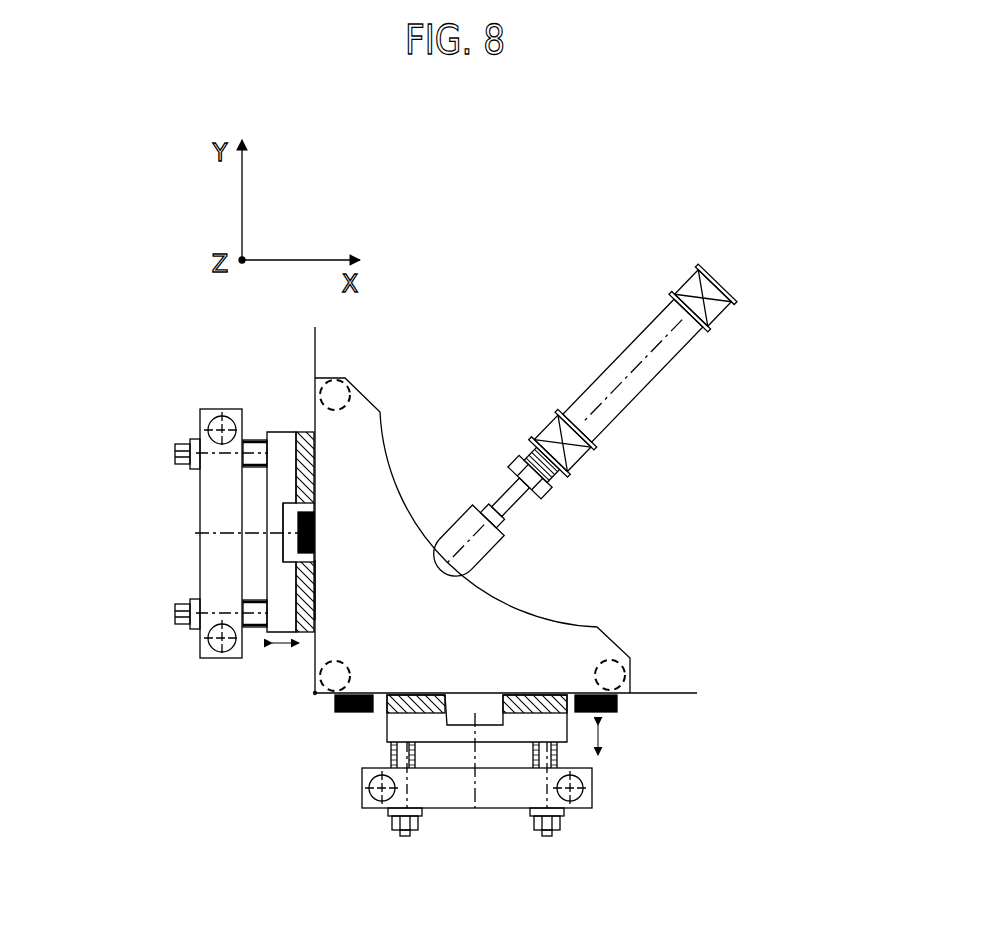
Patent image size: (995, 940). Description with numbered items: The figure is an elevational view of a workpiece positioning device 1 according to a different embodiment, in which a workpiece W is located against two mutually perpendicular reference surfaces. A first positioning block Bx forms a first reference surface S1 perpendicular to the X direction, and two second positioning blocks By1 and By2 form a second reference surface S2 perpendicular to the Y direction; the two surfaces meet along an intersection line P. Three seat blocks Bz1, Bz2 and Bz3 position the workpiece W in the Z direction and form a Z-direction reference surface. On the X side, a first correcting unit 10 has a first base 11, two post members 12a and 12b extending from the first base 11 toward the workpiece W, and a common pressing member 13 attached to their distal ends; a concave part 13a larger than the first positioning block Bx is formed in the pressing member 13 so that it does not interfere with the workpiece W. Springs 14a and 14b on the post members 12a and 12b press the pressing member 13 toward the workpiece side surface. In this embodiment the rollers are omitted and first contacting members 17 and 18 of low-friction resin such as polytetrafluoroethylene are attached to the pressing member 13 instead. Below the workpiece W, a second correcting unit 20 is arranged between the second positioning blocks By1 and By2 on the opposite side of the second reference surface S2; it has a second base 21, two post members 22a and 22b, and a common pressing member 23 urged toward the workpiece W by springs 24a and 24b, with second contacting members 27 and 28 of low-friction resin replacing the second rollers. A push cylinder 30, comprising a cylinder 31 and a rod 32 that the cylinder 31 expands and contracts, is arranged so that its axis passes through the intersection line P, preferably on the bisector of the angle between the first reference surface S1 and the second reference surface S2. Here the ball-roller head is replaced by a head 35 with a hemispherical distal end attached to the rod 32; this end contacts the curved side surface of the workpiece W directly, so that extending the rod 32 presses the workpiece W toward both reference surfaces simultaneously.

The workpiece positioning device 1 is at (796, 292).
The first correcting unit 10 is at (98, 330).
The first base 11 is at (217, 567).
The post member 12a is at (257, 440).
The post member 12b is at (257, 630).
The pressing member 13 is at (277, 510).
The concave part 13a is at (277, 542).
The spring 14a is at (260, 467).
The spring 14b is at (255, 598).
The first contacting member 17 is at (300, 440).
The first contacting member 18 is at (315, 592).
The second correcting unit 20 is at (286, 825).
The second base 21 is at (458, 797).
The post member 22a is at (430, 755).
The post member 22b is at (525, 755).
The pressing member 23 is at (493, 733).
The spring 24a is at (395, 757).
The spring 24b is at (600, 740).
The second contacting member 27 is at (412, 712).
The second contacting member 28 is at (540, 693).
The push cylinder 30 is at (608, 276).
The cylinder 31 is at (645, 378).
The rod 32 is at (505, 465).
The head 35 is at (458, 523).
The workpiece W is at (365, 438).
The first positioning block Bx is at (293, 532).
The second positioning block By1 is at (335, 705).
The second positioning block By2 is at (618, 705).
The seat block Bz1 is at (335, 380).
The seat block Bz2 is at (348, 673).
The seat block Bz3 is at (610, 665).
The intersection line P is at (313, 695).
The first reference surface S1 is at (314, 353).
The second reference surface S2 is at (680, 693).